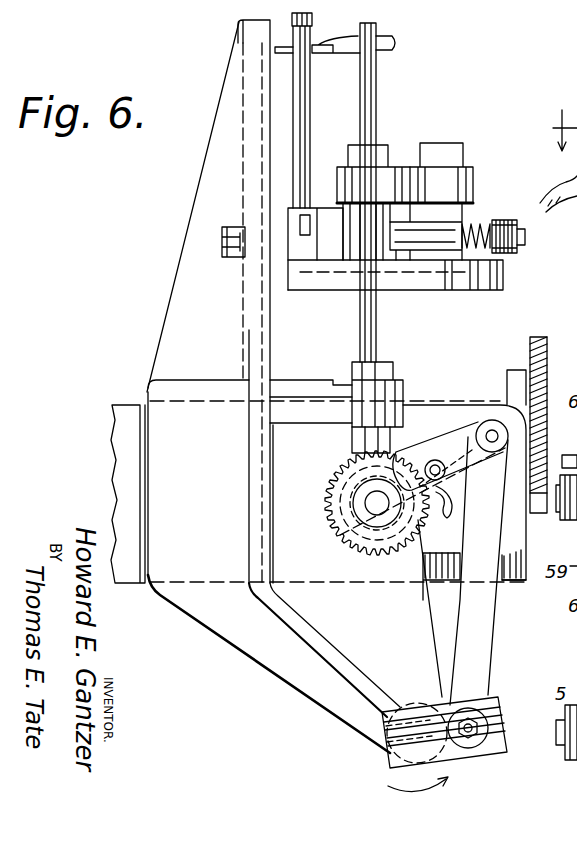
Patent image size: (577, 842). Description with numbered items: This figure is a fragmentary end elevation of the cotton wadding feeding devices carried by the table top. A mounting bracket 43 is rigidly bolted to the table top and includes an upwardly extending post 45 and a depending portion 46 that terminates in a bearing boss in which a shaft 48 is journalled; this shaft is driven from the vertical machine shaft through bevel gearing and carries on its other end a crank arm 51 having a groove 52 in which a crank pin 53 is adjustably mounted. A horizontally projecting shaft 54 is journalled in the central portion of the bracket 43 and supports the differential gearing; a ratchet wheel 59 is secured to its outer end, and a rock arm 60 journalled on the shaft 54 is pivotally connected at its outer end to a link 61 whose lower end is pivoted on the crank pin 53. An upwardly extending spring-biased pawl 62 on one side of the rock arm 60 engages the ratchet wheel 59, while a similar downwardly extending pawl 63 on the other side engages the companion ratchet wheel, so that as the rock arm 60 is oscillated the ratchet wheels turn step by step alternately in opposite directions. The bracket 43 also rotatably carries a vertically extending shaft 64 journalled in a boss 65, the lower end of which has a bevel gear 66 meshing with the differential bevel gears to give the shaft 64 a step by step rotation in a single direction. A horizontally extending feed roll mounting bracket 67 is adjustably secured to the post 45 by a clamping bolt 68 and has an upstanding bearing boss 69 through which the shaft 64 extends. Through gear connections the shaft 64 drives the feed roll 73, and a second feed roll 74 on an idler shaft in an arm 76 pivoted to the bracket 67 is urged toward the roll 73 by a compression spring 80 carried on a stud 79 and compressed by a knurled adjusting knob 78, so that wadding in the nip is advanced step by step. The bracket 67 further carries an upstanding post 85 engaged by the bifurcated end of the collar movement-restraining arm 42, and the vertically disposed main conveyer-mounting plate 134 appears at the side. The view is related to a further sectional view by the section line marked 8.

The section line arrow 8 is at (553, 161).
The laterally extending arm 42 is at (346, 56).
The mounting bracket 43 is at (141, 392).
The upwardly extending post 45 is at (216, 151).
The depending portion 46 is at (268, 660).
The shaft 48 is at (385, 772).
The crank arm 51 is at (453, 758).
The groove 52 is at (493, 722).
The crank pin 53 is at (470, 718).
The horizontally projecting shaft 54 is at (370, 510).
The ratchet wheel 59 is at (333, 484).
The rock arm 60 is at (461, 440).
The link 61 is at (483, 593).
The upwardly extending spring-biased pawl 62 is at (420, 452).
The downwardly extending spring-biased pawl 63 is at (441, 515).
The vertically extending shaft 64 is at (380, 91).
The boss 65 is at (399, 392).
The bevel gear 66 is at (363, 437).
The feed roll mounting bracket 67 is at (300, 291).
The clamping bolt 68 is at (230, 259).
The upstanding bearing boss 69 is at (344, 233).
The feed roll 73 is at (391, 165).
The second feed roll 74 is at (472, 172).
The arm 76 is at (441, 213).
The knurled adjusting knob 78 is at (506, 221).
The stud 79 is at (526, 240).
The compression spring 80 is at (480, 224).
The upstanding post 85 is at (308, 111).
The main conveyer-mounting plate 134 is at (539, 337).